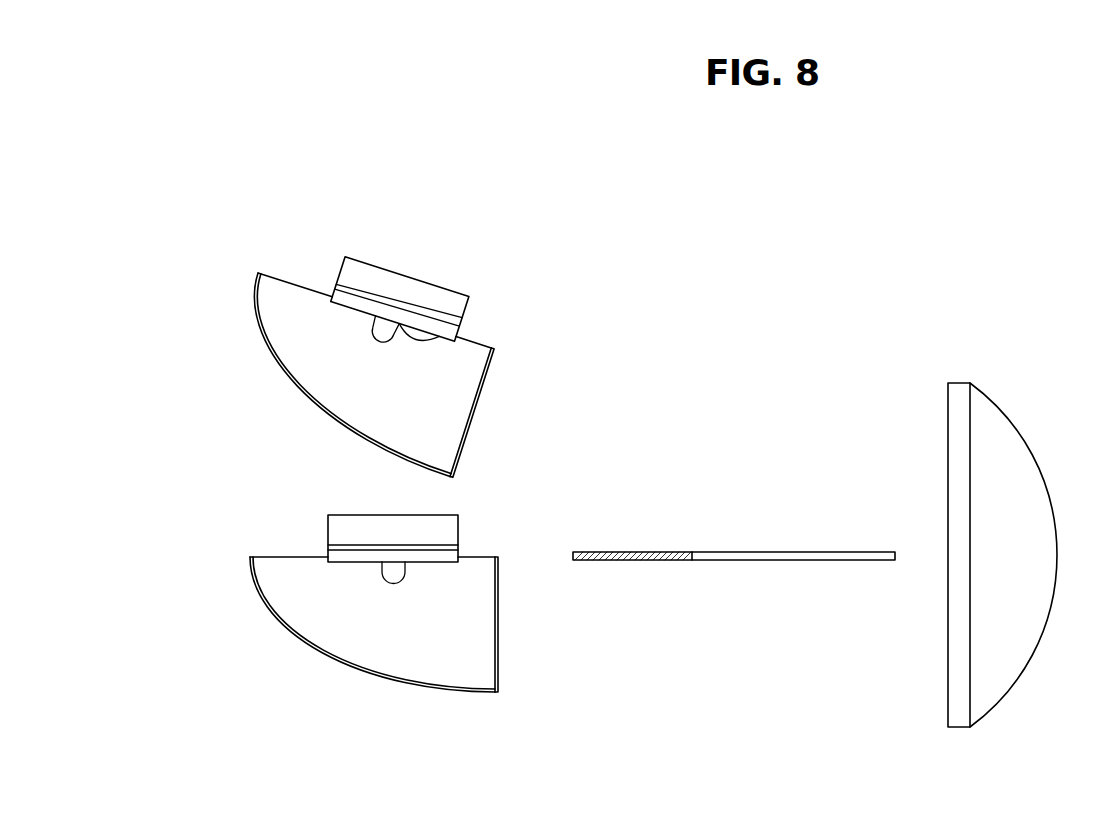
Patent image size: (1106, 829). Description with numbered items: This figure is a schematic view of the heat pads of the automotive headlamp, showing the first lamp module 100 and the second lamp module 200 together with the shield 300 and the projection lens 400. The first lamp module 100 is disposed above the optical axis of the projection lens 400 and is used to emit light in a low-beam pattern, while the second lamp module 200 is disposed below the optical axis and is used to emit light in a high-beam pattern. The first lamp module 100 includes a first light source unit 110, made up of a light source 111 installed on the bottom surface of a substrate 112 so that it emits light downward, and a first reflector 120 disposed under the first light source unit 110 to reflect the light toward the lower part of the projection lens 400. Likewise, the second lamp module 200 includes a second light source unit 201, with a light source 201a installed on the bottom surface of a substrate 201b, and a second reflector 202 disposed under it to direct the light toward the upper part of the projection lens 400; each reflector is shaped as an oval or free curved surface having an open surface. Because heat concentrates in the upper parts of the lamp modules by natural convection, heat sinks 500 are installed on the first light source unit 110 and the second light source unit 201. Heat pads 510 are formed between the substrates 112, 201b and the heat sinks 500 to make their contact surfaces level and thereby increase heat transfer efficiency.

The first lamp module 100 is at (287, 408).
The first light source unit 110 is at (458, 237).
The light source 111 is at (440, 330).
The substrate 112 is at (392, 318).
The first reflector 120 is at (347, 438).
The second lamp module 200 is at (267, 639).
The second light source unit 201 is at (389, 649).
The light source 201a is at (404, 578).
The substrate 201b is at (357, 558).
The second reflector 202 is at (319, 655).
The shield 300 is at (711, 588).
The projection lens 400 is at (1023, 653).
The heat sink 500 is at (337, 274).
The heat pad 510 is at (334, 287).